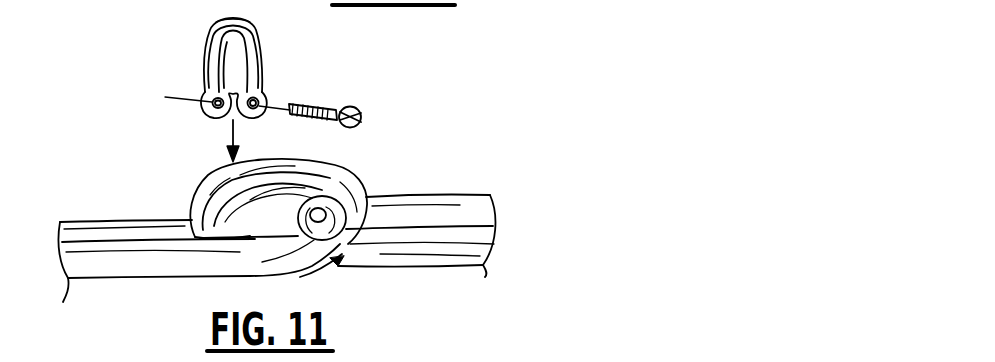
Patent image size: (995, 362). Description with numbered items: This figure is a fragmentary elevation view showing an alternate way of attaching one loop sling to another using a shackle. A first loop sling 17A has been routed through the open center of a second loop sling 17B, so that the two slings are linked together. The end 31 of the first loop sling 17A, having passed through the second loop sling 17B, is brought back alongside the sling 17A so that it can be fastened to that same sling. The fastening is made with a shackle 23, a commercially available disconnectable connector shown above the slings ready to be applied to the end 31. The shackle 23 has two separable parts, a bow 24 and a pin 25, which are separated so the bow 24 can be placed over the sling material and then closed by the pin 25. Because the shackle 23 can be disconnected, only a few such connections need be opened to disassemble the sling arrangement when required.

The first loop sling 17A is at (143, 273).
The second loop sling 17B is at (436, 202).
The shackle 23 is at (250, 42).
The bow 24 is at (233, 25).
The pin 25 is at (362, 113).
The end of the loop sling 31 is at (197, 198).